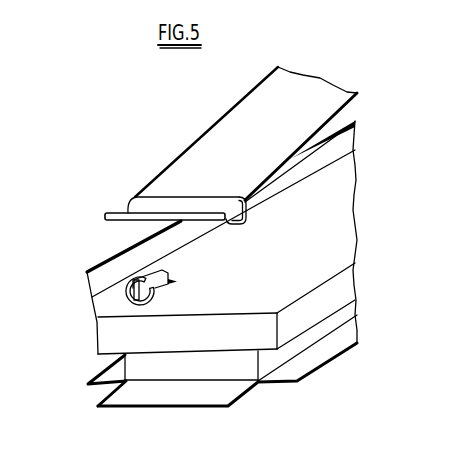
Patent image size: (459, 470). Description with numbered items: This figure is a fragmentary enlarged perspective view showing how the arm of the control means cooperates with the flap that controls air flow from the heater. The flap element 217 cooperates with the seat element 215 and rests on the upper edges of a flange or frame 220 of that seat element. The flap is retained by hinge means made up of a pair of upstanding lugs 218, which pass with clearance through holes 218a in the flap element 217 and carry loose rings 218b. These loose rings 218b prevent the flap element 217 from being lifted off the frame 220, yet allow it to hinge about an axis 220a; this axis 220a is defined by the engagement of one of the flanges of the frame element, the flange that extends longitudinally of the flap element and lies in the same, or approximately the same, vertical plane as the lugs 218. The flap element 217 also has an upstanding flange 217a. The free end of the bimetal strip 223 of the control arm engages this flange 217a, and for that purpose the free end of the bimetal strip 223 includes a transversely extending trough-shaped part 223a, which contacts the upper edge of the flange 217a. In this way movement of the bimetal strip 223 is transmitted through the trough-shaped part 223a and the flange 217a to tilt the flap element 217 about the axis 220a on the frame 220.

The seat element 215 is at (258, 383).
The flap element 217 is at (247, 237).
The upstanding flange 217a is at (73, 276).
The upstanding lugs 218 is at (132, 279).
The holes 218a is at (176, 282).
The loose rings 218b is at (156, 299).
The flange or frame 220 is at (293, 348).
The axis 220a is at (122, 361).
The bimetal strip 223 is at (242, 145).
The trough-shaped part 223a is at (127, 212).